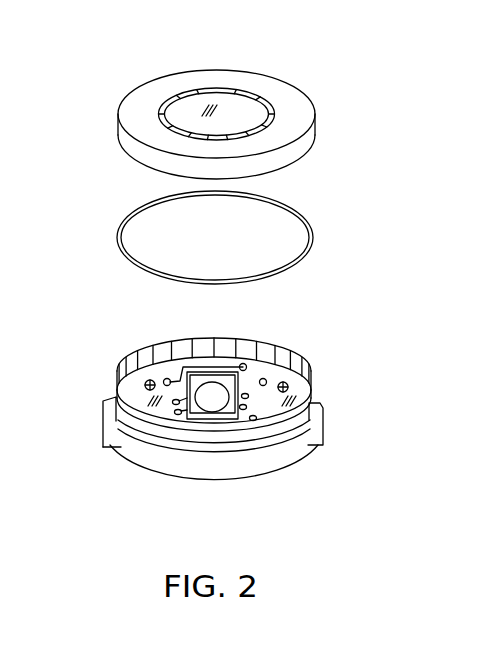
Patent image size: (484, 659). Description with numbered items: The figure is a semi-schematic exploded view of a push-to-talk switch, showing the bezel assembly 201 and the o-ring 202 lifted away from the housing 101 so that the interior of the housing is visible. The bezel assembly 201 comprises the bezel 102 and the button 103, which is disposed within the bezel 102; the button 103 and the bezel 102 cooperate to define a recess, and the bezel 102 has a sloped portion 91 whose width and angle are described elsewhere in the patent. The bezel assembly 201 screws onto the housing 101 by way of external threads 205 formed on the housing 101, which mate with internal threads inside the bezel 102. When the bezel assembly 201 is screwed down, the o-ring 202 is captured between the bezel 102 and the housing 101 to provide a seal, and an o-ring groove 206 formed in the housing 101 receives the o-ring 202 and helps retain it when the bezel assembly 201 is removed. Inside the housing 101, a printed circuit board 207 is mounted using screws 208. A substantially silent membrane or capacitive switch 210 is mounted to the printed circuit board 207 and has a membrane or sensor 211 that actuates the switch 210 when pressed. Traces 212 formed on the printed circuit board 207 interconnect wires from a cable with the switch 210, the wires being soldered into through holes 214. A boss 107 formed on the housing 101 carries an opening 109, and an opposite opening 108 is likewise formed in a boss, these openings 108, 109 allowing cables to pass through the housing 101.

The housing 101 is at (181, 470).
The bezel 102 is at (263, 82).
The button 103 is at (190, 103).
The sloped portion 91 is at (273, 128).
The bezel assembly 201 is at (104, 153).
The o-ring 202 is at (287, 206).
The external threads 205 is at (258, 433).
The o-ring groove 206 is at (138, 437).
The printed circuit board 207 is at (281, 370).
The screws 208 is at (144, 385).
The membrane or capacitive switch 210 is at (214, 420).
The membrane or sensor 211 is at (224, 378).
The traces 212 is at (196, 362).
The through holes 214 is at (164, 379).
The boss 107 is at (118, 448).
The opening 108 is at (327, 431).
The opening 109 is at (104, 420).